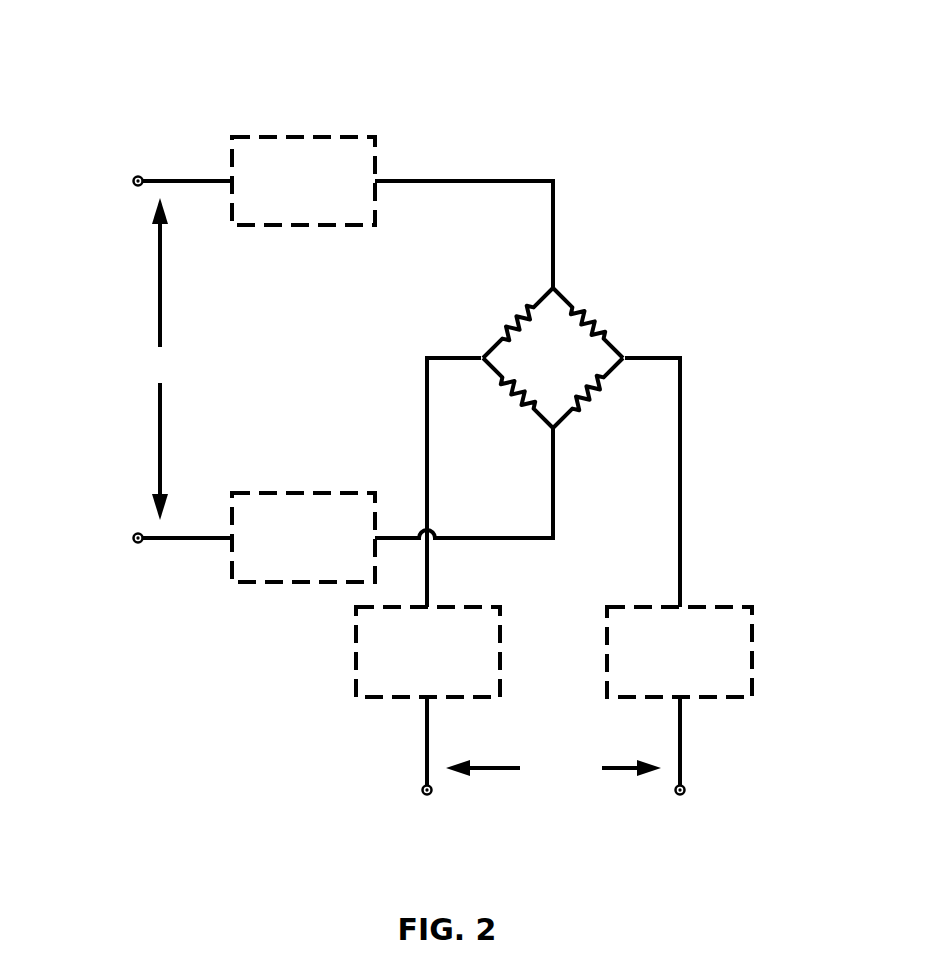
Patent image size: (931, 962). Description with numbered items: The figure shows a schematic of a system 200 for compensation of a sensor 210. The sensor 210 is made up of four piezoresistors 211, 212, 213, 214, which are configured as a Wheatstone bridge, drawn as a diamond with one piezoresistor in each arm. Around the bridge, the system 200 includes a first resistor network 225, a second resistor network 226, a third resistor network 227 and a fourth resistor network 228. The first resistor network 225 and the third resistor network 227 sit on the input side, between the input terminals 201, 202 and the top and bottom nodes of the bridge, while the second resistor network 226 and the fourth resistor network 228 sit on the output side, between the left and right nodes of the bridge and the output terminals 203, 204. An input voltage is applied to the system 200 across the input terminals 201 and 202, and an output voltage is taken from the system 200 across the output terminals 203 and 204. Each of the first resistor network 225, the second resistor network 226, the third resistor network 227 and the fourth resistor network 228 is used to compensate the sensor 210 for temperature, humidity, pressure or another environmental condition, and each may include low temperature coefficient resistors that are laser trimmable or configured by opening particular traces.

The system for compensation of a sensor 200 is at (428, 40).
The input terminal 201 is at (134, 178).
The input terminal 202 is at (134, 535).
The output terminal 203 is at (423, 797).
The output terminal 204 is at (678, 797).
The sensor 210 is at (582, 327).
The piezoresistor 211 is at (596, 395).
The piezoresistor 212 is at (510, 395).
The piezoresistor 213 is at (510, 323).
The piezoresistor 214 is at (596, 323).
The first resistor network 225 is at (307, 137).
The second resistor network 226 is at (500, 652).
The third resistor network 227 is at (307, 493).
The fourth resistor network 228 is at (752, 652).